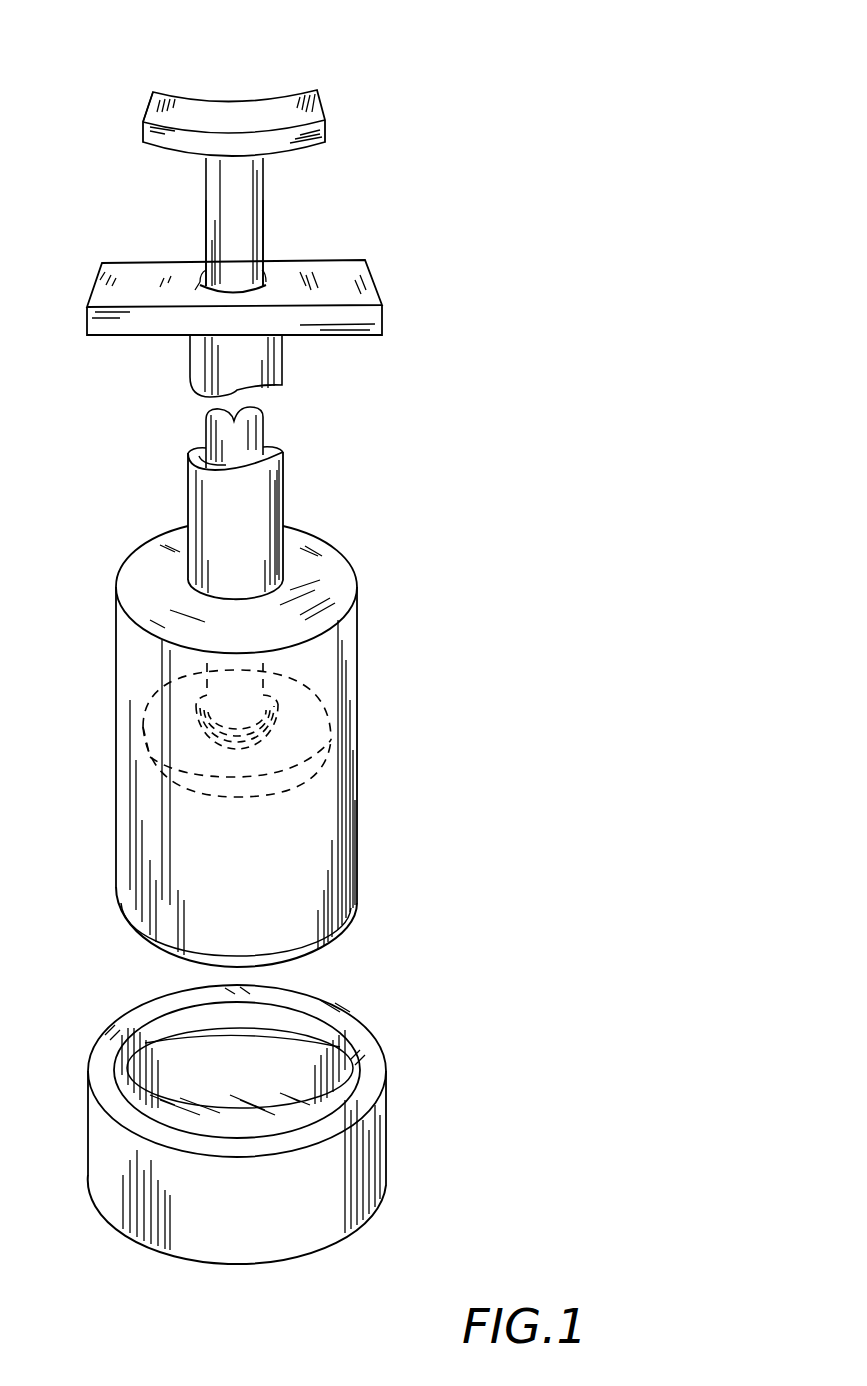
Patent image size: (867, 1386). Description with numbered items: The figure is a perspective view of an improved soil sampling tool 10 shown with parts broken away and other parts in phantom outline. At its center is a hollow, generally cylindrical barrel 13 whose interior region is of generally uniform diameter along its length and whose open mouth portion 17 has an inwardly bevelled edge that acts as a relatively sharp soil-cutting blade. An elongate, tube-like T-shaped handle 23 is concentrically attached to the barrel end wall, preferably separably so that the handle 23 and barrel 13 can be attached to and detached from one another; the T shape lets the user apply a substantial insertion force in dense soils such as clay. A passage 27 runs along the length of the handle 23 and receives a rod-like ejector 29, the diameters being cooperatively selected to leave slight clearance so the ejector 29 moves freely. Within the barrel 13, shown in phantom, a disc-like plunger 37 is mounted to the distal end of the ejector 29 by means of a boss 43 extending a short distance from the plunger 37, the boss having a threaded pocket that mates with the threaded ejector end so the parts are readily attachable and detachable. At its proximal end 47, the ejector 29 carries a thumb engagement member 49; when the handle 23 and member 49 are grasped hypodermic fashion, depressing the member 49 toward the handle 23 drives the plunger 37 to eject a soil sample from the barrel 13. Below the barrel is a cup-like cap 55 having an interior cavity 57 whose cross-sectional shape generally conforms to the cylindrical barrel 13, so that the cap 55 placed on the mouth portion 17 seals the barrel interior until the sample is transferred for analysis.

The sampling tool 10 is at (382, 405).
The barrel 13 is at (358, 755).
The mouth portion 17 is at (357, 887).
The handle 23 is at (282, 483).
The passage 27 is at (202, 448).
The ejector 29 is at (265, 243).
The plunger 37 is at (303, 722).
The boss 43 is at (203, 733).
The proximal end 47 is at (263, 173).
The thumb engagement member 49 is at (238, 118).
The cap 55 is at (387, 1143).
The interior cavity 57 is at (238, 1098).